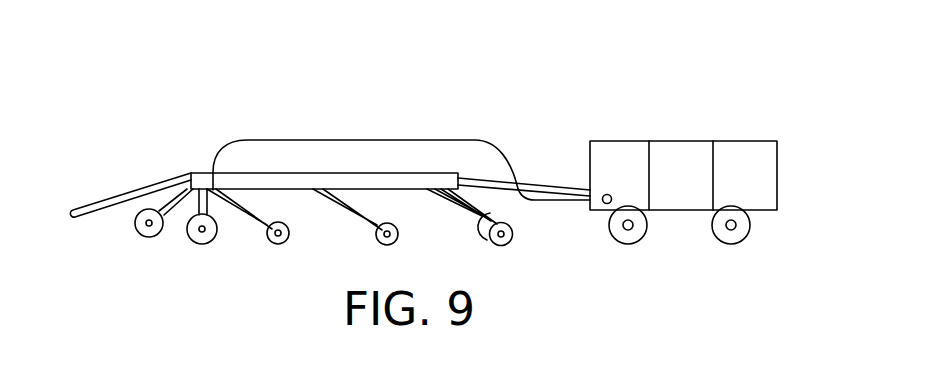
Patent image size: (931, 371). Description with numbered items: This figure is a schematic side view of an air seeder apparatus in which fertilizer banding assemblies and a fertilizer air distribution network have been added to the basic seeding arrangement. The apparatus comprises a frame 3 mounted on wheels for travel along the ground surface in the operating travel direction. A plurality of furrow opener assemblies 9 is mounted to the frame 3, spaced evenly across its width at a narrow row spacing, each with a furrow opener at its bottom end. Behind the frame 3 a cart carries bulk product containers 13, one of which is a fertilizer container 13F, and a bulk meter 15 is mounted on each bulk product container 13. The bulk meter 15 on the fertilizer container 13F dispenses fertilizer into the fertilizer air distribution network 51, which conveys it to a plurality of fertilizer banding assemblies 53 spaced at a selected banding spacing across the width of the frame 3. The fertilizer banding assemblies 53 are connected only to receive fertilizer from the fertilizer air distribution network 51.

The frame 3 is at (348, 173).
The fertilizer air distribution network 51 is at (273, 139).
The furrow opener assembly 9 is at (259, 228).
The fertilizer banding assembly 53 is at (195, 245).
The bulk meter 15 is at (608, 193).
The bulk product container 13 is at (683, 172).
The fertilizer container 13F is at (627, 140).